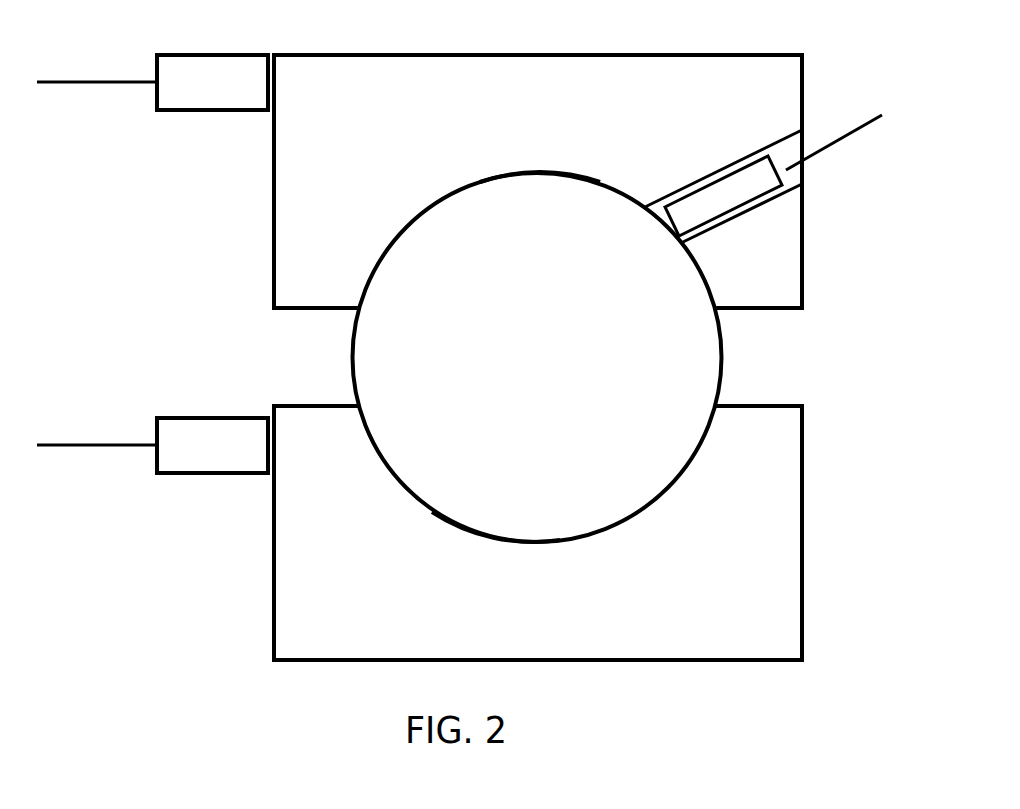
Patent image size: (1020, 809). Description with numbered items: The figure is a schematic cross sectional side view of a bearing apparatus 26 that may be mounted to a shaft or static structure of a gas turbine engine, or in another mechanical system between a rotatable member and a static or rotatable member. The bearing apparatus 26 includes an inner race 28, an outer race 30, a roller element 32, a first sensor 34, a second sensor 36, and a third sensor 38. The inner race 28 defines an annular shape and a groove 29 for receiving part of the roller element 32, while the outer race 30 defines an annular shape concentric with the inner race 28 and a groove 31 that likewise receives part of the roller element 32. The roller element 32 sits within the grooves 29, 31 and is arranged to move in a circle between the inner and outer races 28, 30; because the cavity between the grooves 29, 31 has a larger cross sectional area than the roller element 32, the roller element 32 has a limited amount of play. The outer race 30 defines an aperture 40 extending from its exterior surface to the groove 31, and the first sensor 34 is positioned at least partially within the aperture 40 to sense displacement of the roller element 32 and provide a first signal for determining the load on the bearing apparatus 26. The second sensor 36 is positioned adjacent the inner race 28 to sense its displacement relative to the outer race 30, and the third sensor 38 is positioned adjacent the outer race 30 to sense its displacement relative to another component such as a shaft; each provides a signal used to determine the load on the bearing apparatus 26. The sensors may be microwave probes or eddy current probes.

The bearing apparatus 26 is at (203, 652).
The inner race 28 is at (780, 528).
The groove 29 is at (432, 512).
The outer race 30 is at (298, 168).
The groove 31 is at (478, 182).
The roller element 32 is at (553, 370).
The first sensor 34 is at (727, 195).
The second sensor 36 is at (213, 445).
The third sensor 38 is at (197, 93).
The aperture 40 is at (793, 172).